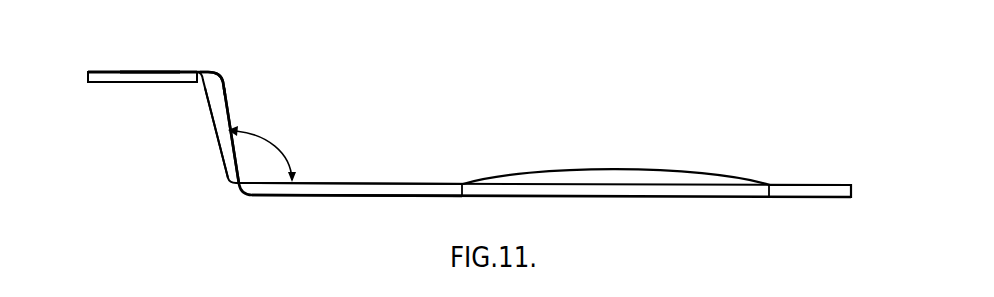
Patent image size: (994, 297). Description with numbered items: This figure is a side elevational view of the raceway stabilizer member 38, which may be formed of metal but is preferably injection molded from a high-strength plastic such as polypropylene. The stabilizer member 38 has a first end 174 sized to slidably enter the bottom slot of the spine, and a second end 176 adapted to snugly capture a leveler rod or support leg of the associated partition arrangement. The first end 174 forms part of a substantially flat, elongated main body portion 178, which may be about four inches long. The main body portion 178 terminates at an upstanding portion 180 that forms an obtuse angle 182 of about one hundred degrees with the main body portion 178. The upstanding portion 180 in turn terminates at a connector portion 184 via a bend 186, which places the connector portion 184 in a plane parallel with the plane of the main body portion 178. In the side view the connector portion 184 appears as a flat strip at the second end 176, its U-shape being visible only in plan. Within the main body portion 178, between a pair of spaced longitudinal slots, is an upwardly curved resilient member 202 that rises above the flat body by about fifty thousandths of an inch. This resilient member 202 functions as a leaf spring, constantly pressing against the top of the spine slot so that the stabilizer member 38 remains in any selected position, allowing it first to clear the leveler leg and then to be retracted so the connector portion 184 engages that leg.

The raceway stabilizer member 38 is at (460, 143).
The first end 174 is at (852, 186).
The second end 176 is at (87, 72).
The main body portion 178 is at (392, 182).
The upstanding portion 180 is at (217, 133).
The obtuse angle 182 is at (274, 146).
The connector portion 184 is at (143, 71).
The bend 186 is at (222, 76).
The upwardly curved resilient member 202 is at (622, 177).